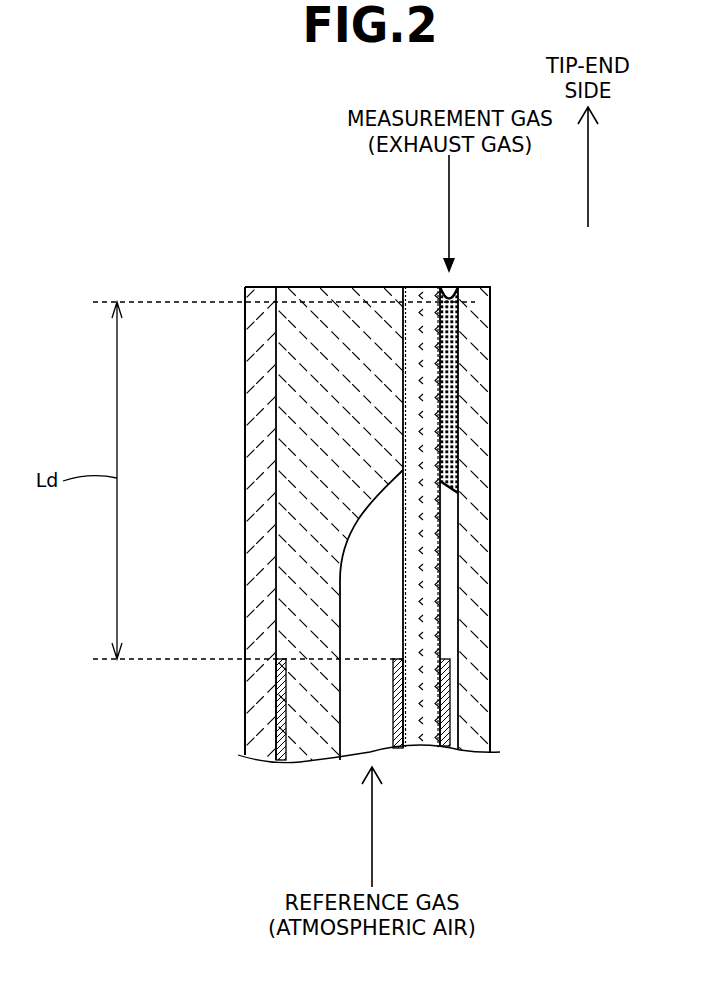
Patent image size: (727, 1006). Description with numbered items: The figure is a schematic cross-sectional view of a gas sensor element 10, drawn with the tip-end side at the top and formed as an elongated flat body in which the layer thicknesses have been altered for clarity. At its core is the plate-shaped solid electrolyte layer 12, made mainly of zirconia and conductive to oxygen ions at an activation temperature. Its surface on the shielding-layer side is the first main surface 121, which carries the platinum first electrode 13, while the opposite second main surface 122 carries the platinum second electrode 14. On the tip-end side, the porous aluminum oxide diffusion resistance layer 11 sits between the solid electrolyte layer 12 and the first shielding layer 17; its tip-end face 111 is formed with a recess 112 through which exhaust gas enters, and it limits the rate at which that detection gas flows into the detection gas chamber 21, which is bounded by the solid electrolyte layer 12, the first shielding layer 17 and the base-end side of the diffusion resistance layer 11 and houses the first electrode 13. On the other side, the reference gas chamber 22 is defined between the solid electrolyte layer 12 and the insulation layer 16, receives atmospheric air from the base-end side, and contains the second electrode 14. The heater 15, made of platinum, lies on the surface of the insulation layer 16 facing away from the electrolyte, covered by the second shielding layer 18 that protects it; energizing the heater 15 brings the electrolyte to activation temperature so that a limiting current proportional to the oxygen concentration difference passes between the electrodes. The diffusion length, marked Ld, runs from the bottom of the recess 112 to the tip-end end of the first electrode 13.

The gas sensor element 10 is at (240, 237).
The diffusion resistance layer 11 is at (450, 350).
The tip-end face 111 is at (452, 284).
The recess 112 is at (446, 284).
The solid electrolyte layer 12 is at (412, 280).
The first main surface 121 is at (440, 528).
The second main surface 122 is at (403, 548).
The first electrode 13 is at (447, 678).
The second electrode 14 is at (400, 728).
The heater 15 is at (276, 710).
The insulation layer 16 is at (316, 295).
The first shielding layer 17 is at (483, 422).
The second shielding layer 18 is at (247, 723).
The detection gas chamber 21 is at (452, 584).
The reference gas chamber 22 is at (390, 625).